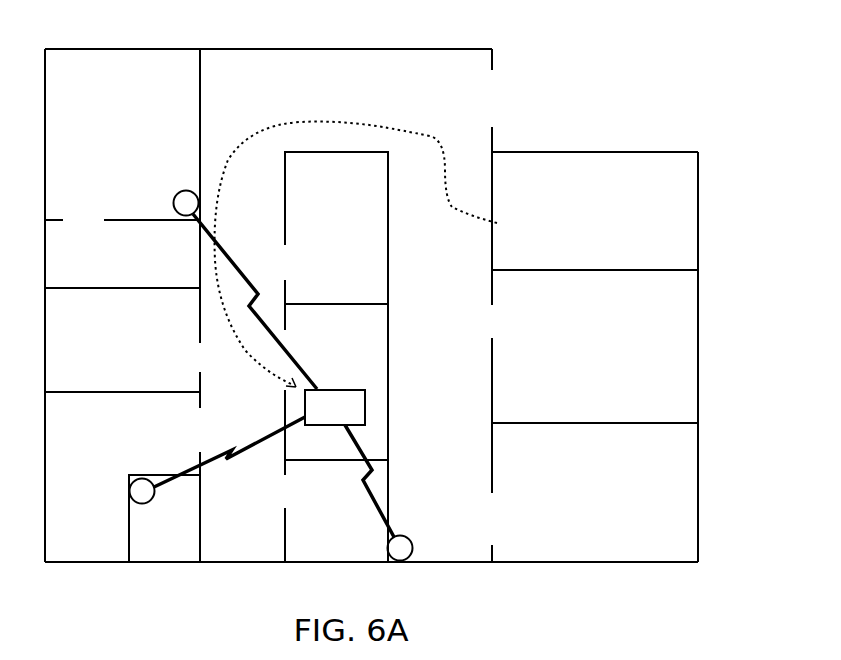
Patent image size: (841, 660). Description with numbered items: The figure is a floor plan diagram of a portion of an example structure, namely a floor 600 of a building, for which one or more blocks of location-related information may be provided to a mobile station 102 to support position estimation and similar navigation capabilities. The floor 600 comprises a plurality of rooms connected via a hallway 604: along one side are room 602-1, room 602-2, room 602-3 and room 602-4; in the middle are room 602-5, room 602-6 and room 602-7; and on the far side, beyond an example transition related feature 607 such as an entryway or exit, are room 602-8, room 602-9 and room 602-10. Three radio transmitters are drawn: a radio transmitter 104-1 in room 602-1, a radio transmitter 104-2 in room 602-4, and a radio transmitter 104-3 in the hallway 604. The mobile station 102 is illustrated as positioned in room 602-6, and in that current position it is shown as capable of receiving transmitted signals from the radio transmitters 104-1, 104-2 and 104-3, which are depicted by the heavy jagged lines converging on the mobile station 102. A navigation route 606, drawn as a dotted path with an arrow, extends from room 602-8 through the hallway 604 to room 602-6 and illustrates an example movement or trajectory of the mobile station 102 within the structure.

The floor 600 is at (619, 71).
The room 602-1 is at (160, 147).
The room 602-2 is at (150, 348).
The room 602-3 is at (142, 438).
The room 602-4 is at (193, 554).
The room 602-5 is at (367, 213).
The room 602-6 is at (373, 341).
The room 602-7 is at (365, 553).
The room 602-8 is at (623, 231).
The room 602-9 is at (630, 353).
The room 602-10 is at (635, 494).
The hallway 604 is at (290, 91).
The navigation route 606 is at (386, 126).
The transition related feature 607 is at (494, 105).
The mobile station 102 is at (353, 418).
The radio transmitter 104-1 is at (186, 212).
The radio transmitter 104-2 is at (142, 492).
The radio transmitter 104-3 is at (400, 550).